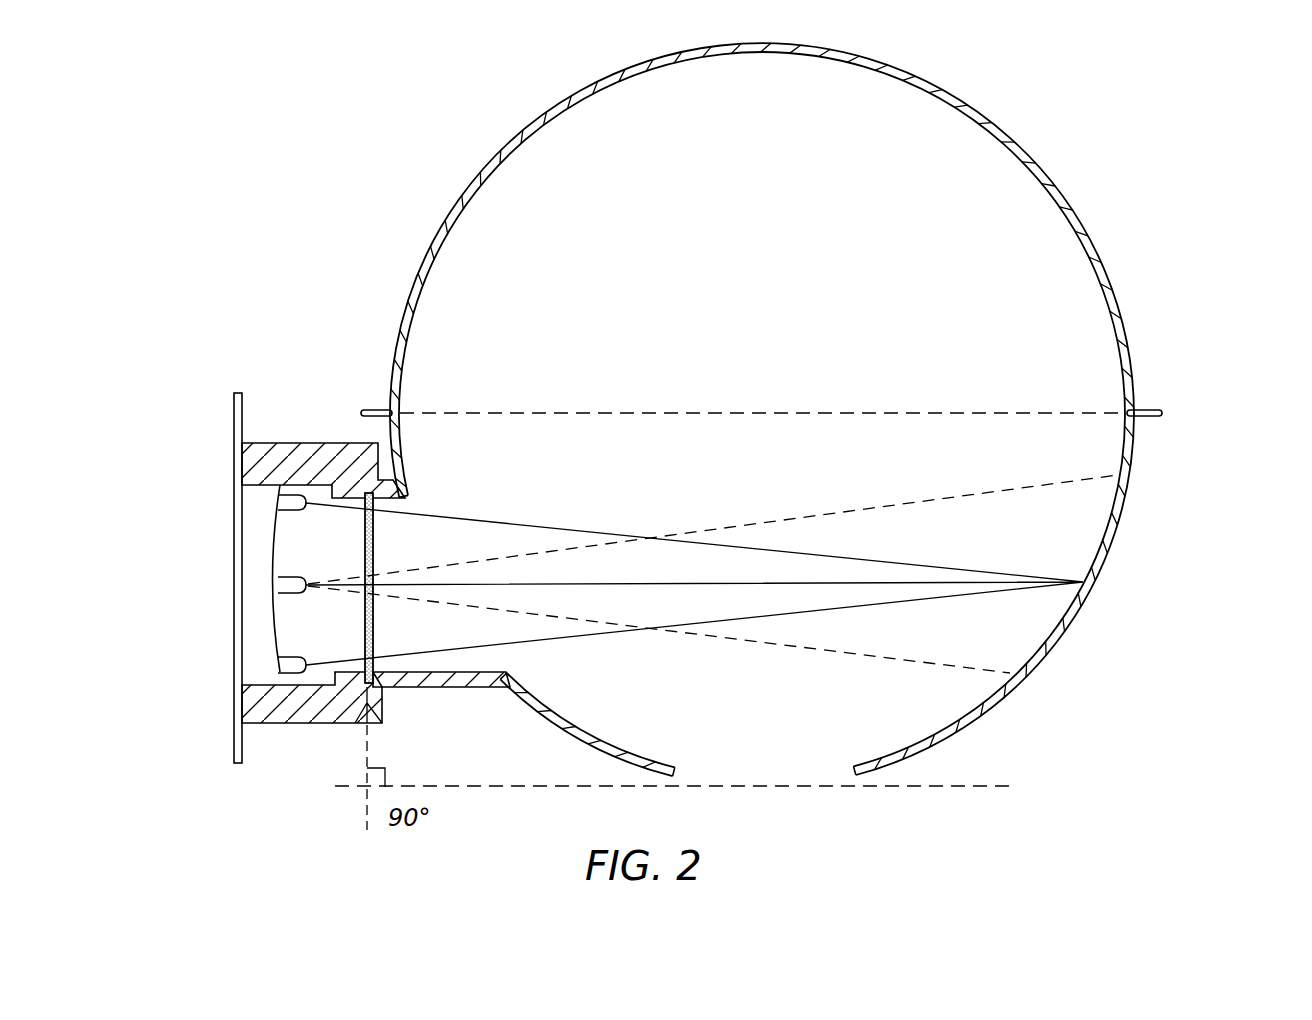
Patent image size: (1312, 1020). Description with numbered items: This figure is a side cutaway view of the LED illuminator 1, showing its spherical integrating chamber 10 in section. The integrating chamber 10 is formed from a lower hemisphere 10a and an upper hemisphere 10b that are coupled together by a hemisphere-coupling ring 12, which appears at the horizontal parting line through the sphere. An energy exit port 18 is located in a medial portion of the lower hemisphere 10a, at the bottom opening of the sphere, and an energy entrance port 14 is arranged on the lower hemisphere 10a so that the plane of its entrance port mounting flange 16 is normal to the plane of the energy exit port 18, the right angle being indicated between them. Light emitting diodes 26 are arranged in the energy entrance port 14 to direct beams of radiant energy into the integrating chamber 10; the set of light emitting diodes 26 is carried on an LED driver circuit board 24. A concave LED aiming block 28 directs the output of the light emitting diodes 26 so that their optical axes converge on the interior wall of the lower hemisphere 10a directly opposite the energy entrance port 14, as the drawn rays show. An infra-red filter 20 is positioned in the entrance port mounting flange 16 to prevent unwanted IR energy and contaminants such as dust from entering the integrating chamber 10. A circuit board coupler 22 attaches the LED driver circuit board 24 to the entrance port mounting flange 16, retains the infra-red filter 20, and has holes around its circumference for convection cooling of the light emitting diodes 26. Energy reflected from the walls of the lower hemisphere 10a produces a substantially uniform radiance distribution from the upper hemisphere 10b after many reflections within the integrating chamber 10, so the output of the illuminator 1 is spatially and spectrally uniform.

The illuminator 1 is at (328, 196).
The integrating chamber 10 is at (1134, 320).
The lower hemisphere 10a is at (1037, 637).
The upper hemisphere 10b is at (1017, 184).
The hemisphere-coupling ring 12 is at (372, 407).
The energy entrance port 14 is at (448, 688).
The entrance port mounting flange 16 is at (375, 728).
The energy exit port 18 is at (783, 775).
The infra-red filter 20 is at (376, 556).
The circuit board coupler 22 is at (320, 725).
The LED driver circuit board 24 is at (232, 410).
The light emitting diodes 26 is at (300, 515).
The concave LED aiming block 28 is at (240, 548).